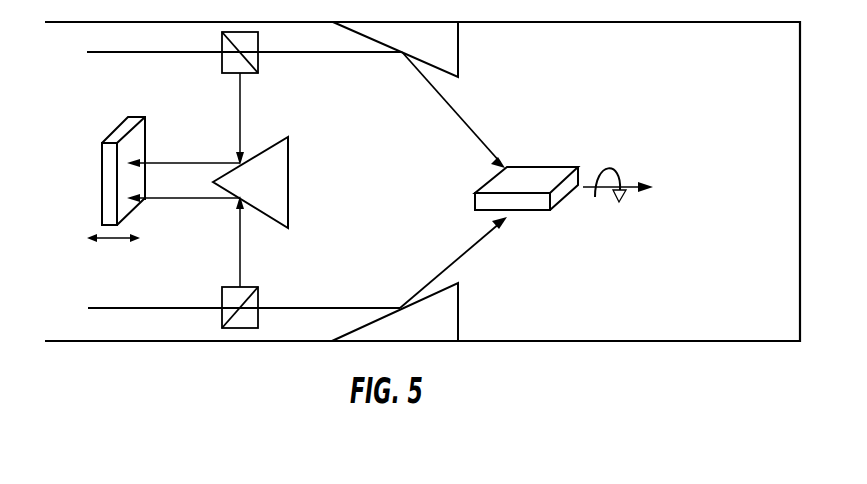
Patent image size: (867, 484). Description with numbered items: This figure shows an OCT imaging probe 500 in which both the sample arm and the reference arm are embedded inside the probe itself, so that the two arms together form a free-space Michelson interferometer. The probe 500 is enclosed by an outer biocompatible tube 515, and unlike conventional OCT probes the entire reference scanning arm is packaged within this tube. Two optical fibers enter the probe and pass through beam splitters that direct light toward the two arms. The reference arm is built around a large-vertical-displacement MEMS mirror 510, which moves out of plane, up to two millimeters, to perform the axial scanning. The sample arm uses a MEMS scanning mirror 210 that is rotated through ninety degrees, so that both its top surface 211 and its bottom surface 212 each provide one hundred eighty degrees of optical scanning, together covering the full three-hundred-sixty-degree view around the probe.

The OCT imaging probe 500 is at (235, 372).
The LVD MEMS mirror 510 is at (102, 188).
The outer biocompatible tube 515 is at (695, 341).
The MEMS scanning mirror 210 is at (566, 175).
The reflective surface of MEMS mirror 211 is at (560, 167).
The MEMS mirror substrate 212 is at (490, 206).